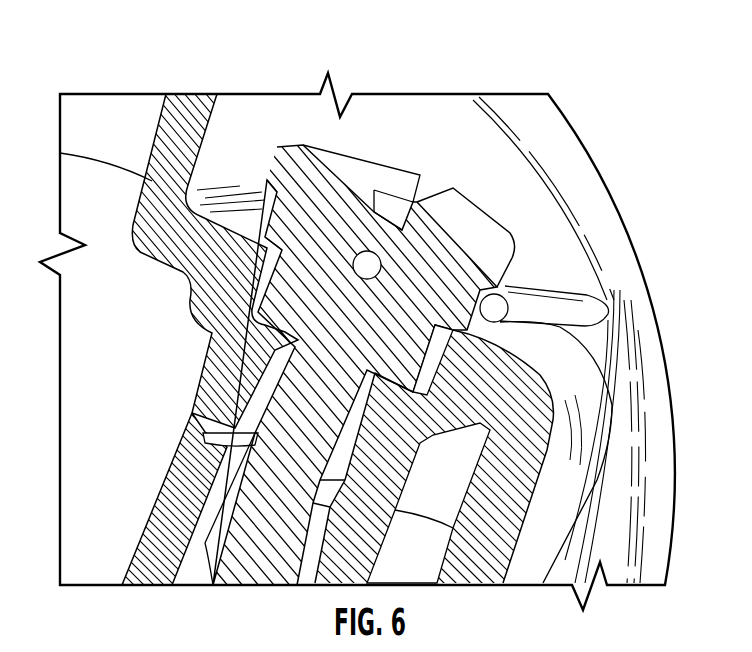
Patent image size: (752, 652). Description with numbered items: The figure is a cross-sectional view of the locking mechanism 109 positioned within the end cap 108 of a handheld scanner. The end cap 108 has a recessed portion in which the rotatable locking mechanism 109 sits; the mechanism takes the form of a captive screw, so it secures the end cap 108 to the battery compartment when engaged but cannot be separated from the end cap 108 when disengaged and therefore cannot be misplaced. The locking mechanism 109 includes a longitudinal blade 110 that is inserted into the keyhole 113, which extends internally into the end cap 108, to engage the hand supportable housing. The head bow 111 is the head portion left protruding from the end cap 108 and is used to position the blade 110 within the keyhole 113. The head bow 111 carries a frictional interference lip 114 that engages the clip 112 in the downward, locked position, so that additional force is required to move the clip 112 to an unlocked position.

The end cap 108 is at (197, 110).
The locking mechanism 109 is at (463, 207).
The longitudinal blade 110 is at (293, 398).
The head bow 111 is at (367, 163).
The clip 112 is at (585, 325).
The keyhole 113 is at (355, 445).
The frictional interference lip 114 is at (515, 276).